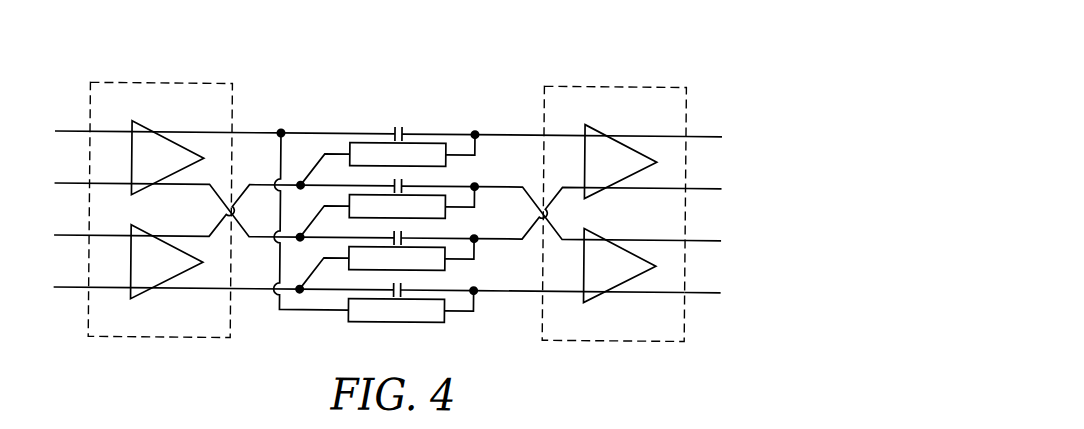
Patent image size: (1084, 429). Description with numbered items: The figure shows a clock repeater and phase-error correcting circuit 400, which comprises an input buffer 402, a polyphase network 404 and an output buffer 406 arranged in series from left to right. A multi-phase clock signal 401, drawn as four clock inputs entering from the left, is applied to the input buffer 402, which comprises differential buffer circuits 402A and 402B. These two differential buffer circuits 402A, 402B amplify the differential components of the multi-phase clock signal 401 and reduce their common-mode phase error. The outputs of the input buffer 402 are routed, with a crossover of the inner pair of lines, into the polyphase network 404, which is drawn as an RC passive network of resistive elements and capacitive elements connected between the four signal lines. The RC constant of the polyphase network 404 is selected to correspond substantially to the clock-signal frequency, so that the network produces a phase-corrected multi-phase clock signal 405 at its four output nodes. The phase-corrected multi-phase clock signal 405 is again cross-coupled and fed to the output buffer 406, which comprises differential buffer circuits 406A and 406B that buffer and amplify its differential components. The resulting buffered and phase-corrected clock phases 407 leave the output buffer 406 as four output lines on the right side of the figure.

The clock repeater and phase-error correcting circuit 400 is at (676, 38).
The multi-phase clock signal 401 is at (37, 97).
The input buffer 402 is at (222, 82).
The differential buffer circuit 402A is at (142, 126).
The differential buffer circuit 402B is at (142, 229).
The polyphase network 404 is at (473, 108).
The phase-corrected multi-phase clock signal 405 is at (497, 90).
The output buffer 406 is at (673, 82).
The differential buffer circuit 406A is at (596, 126).
The differential buffer circuit 406B is at (596, 229).
The output phase signals 407 is at (740, 92).